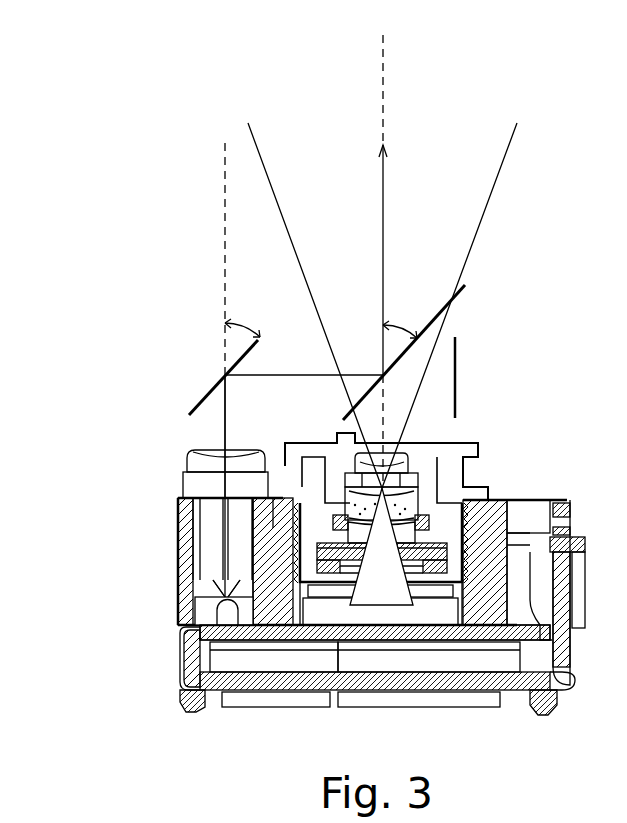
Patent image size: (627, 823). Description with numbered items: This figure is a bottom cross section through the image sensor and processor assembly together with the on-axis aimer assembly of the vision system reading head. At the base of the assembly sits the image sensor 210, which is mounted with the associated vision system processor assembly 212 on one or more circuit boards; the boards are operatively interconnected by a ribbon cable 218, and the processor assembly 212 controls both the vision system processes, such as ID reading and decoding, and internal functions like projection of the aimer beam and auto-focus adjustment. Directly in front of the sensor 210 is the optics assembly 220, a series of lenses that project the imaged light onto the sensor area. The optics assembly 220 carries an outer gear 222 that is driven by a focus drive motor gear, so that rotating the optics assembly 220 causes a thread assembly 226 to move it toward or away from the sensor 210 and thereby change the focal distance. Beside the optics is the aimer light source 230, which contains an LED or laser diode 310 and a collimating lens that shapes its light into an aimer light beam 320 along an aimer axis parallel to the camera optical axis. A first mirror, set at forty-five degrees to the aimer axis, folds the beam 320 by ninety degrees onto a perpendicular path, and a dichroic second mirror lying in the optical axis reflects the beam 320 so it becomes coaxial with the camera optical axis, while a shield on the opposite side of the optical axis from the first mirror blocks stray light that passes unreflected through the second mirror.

The image sensor 210 is at (443, 608).
The vision system processor assembly 212 is at (325, 633).
The ribbon cable 218 is at (177, 658).
The optics assembly 220 is at (428, 484).
The outer gear 222 is at (477, 447).
The thread assembly 226 is at (290, 547).
The aimer light source 230 is at (160, 535).
The laser diode 310 is at (223, 618).
The aimer light beam 320 is at (225, 420).